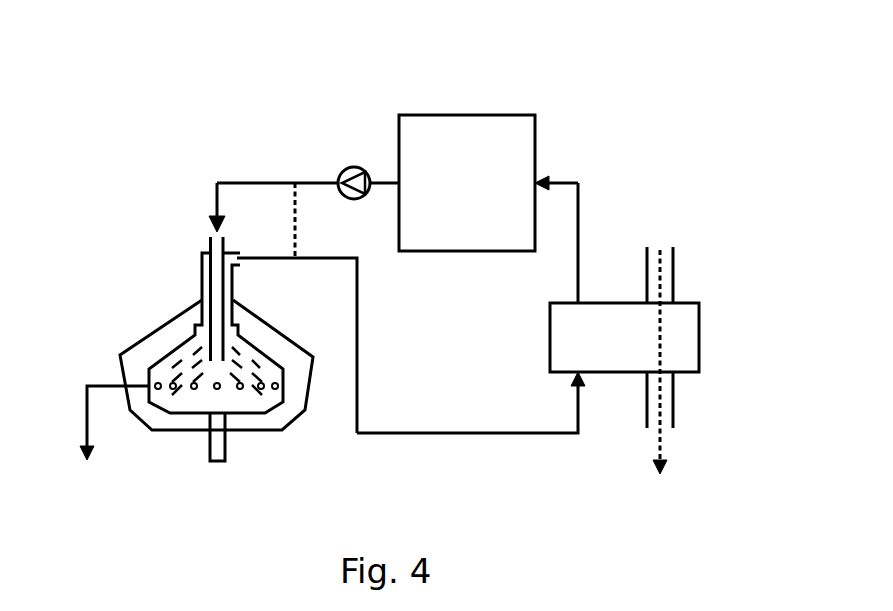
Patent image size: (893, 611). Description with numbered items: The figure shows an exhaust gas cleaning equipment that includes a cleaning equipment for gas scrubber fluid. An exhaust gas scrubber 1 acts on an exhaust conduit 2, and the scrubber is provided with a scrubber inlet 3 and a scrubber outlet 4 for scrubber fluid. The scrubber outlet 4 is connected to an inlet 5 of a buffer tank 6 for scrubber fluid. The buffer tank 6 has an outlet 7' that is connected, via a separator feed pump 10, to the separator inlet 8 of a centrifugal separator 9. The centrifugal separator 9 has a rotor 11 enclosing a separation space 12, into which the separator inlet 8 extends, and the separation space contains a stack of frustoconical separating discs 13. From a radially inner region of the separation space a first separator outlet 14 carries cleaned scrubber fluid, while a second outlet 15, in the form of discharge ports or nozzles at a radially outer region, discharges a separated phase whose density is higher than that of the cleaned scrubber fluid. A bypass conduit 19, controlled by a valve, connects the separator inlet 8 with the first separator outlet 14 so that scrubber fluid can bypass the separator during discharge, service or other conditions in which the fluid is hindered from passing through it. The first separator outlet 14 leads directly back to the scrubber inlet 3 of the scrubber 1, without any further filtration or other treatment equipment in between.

The exhaust gas scrubber 1 is at (624, 337).
The exhaust conduit 2 is at (658, 243).
The scrubber inlet 3 is at (588, 377).
The scrubber outlet 4 is at (588, 298).
The inlet of the buffer tank 5 is at (557, 178).
The buffer tank 6 is at (467, 183).
The outlet of the buffer tank 7' is at (308, 126).
The separator inlet 8 is at (209, 235).
The centrifugal separator 9 is at (140, 308).
The separator feed pump 10 is at (355, 160).
The rotor 11 is at (263, 415).
The separation space 12 is at (203, 380).
The stack of frustoconical separating discs 13 is at (200, 348).
The first separator outlet 14 is at (243, 265).
The second outlet 15 is at (87, 467).
The bypass conduit 19 is at (288, 220).